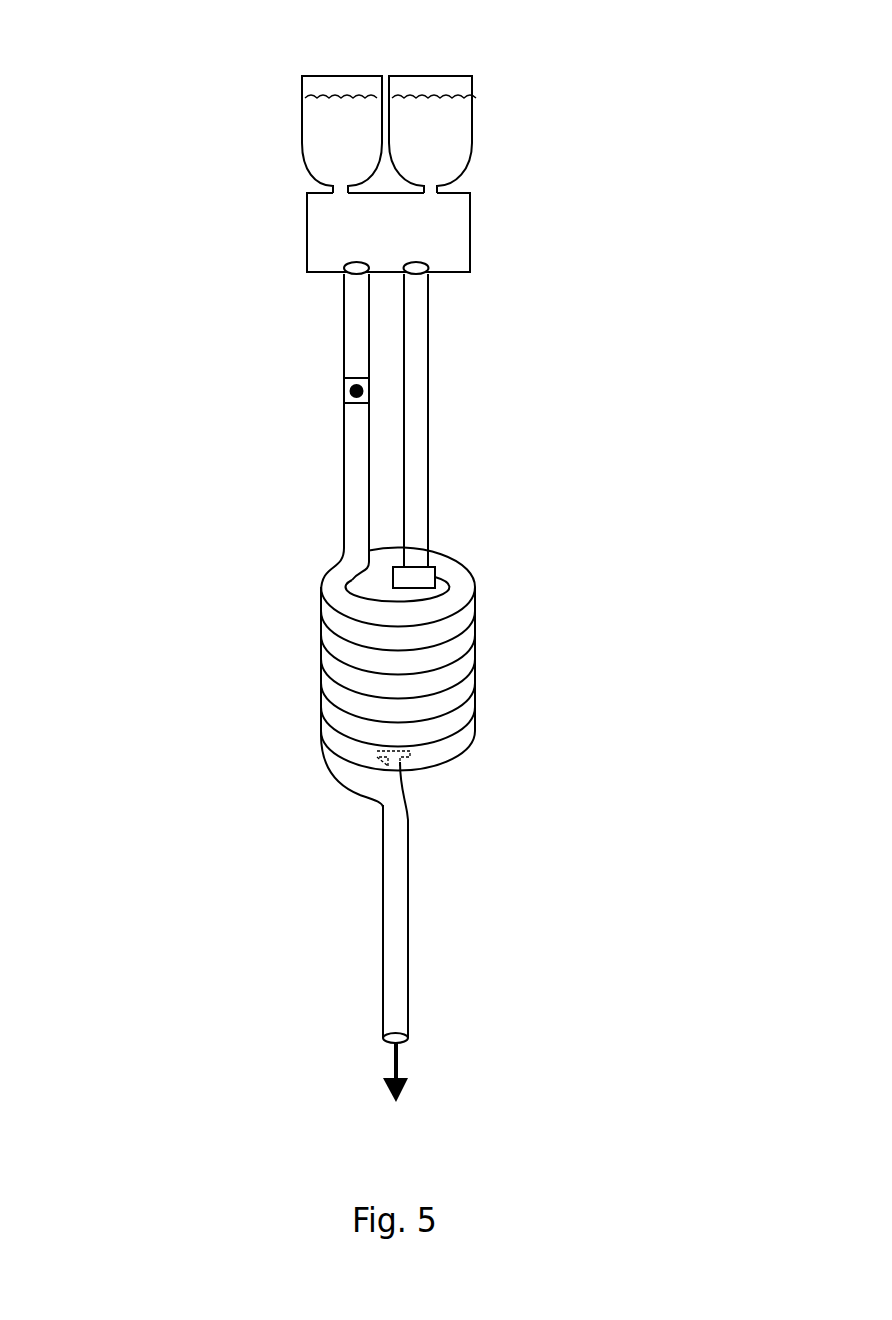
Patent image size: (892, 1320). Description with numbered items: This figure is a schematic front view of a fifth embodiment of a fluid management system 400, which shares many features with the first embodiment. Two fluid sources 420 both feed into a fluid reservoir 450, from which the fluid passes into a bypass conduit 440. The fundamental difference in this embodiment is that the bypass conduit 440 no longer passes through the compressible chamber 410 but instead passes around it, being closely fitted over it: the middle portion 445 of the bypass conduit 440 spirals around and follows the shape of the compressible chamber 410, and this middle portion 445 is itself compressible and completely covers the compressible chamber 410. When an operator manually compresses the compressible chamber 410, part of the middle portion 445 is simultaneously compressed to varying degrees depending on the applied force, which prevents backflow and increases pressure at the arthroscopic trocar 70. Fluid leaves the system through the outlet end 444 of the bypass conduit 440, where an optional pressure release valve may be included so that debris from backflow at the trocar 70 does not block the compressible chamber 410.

The fluid management system 400 is at (231, 66).
The fluid source 420 is at (472, 132).
The fluid reservoir 450 is at (448, 228).
The bypass conduit 440 is at (355, 337).
The compressible chamber 410 is at (400, 600).
The middle portion 445 is at (343, 643).
The outlet end 444 is at (383, 862).
The trocar 70 is at (402, 1070).